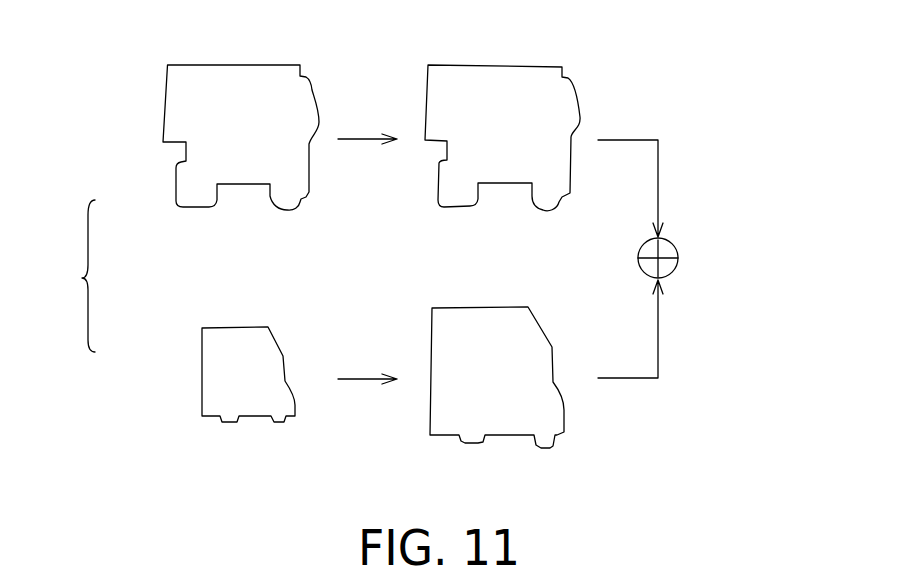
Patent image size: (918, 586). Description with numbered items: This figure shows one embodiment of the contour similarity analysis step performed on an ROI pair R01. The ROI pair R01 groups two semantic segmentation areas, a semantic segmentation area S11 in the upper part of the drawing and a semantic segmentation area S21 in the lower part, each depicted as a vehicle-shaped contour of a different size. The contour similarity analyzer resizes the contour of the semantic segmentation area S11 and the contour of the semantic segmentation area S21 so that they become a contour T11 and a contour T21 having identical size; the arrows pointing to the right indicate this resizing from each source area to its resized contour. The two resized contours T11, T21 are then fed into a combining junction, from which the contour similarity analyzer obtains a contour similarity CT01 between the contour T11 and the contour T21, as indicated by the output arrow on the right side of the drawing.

The semantic segmentation area S11 is at (175, 142).
The semantic segmentation area S21 is at (200, 363).
The ROI pair R01 is at (66, 276).
The contour T11 is at (522, 65).
The contour T21 is at (490, 307).
The contour similarity CT01 is at (678, 258).